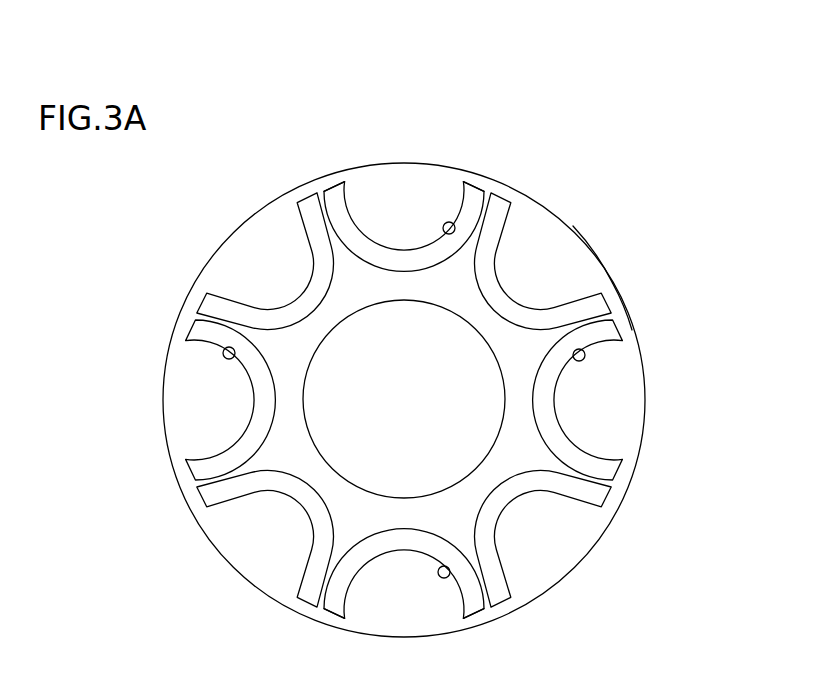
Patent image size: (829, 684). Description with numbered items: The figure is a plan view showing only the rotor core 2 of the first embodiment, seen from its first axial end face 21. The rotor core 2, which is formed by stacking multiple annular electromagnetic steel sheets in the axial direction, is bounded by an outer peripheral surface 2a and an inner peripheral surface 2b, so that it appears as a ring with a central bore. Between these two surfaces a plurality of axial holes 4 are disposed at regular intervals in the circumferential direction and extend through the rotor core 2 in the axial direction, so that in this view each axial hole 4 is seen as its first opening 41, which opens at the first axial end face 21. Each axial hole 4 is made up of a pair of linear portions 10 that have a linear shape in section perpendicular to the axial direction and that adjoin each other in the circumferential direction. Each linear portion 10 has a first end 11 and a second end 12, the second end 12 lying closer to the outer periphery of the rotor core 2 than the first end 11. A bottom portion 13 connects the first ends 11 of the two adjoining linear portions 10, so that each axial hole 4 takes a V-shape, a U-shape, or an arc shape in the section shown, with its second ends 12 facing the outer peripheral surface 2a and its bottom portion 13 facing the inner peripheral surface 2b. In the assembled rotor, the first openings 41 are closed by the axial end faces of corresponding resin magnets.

The rotor core 2 is at (579, 227).
The outer peripheral surface 2a is at (628, 305).
The inner peripheral surface 2b is at (489, 356).
The first axial end face 21 is at (586, 267).
The axial hole 4 is at (447, 222).
The first opening 41 is at (383, 262).
The second end 12 is at (333, 194).
The linear portion 10 is at (360, 246).
The first end 11 is at (384, 262).
The bottom portion 13 is at (404, 263).